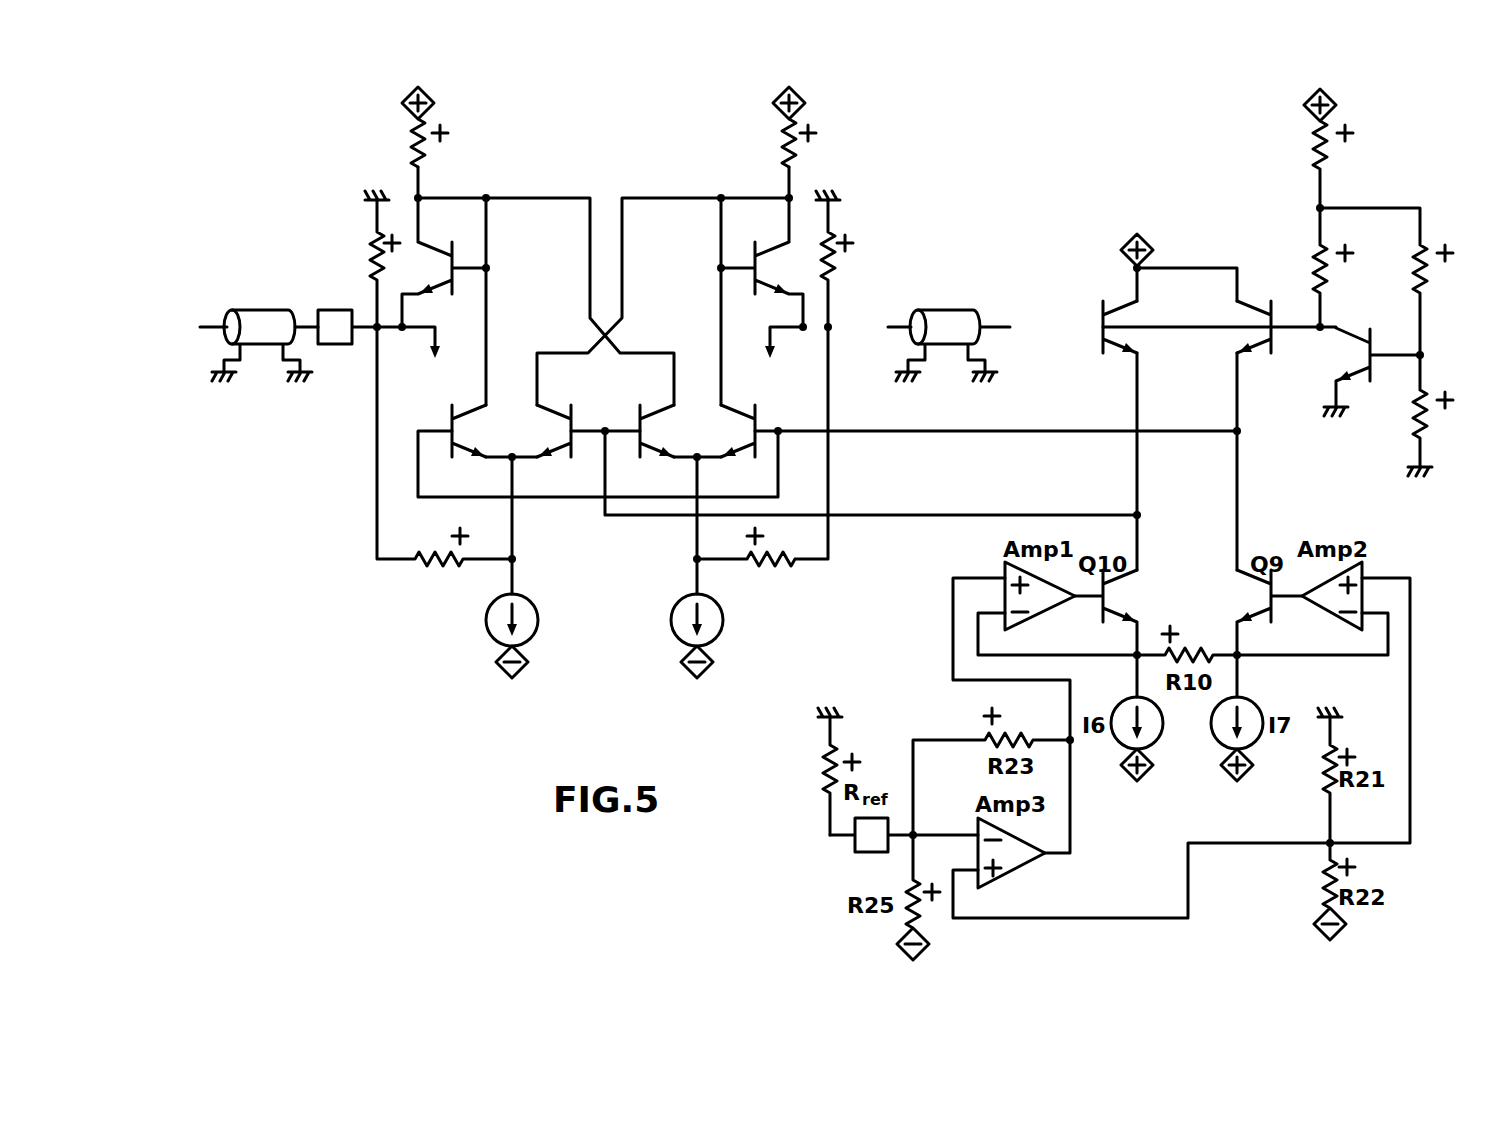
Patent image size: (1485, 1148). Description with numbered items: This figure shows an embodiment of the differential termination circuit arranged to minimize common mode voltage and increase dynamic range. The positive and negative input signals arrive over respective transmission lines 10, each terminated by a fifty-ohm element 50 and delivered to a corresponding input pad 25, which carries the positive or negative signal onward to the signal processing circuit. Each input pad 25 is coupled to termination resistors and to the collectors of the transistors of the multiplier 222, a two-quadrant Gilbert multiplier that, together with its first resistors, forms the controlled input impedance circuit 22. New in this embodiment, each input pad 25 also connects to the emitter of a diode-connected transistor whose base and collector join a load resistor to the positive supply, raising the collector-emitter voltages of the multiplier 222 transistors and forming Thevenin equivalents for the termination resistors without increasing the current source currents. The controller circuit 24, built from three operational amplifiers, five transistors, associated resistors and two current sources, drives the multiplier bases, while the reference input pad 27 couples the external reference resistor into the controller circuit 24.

The transmission line 10 is at (262, 307).
The controlled input impedance circuit 22 is at (691, 296).
The controller circuit 24 is at (1340, 485).
The input pad 25 is at (332, 346).
The reference input pad 27 is at (871, 855).
The 50 ohm termination 50 is at (657, 345).
The multiplier 222 is at (626, 595).